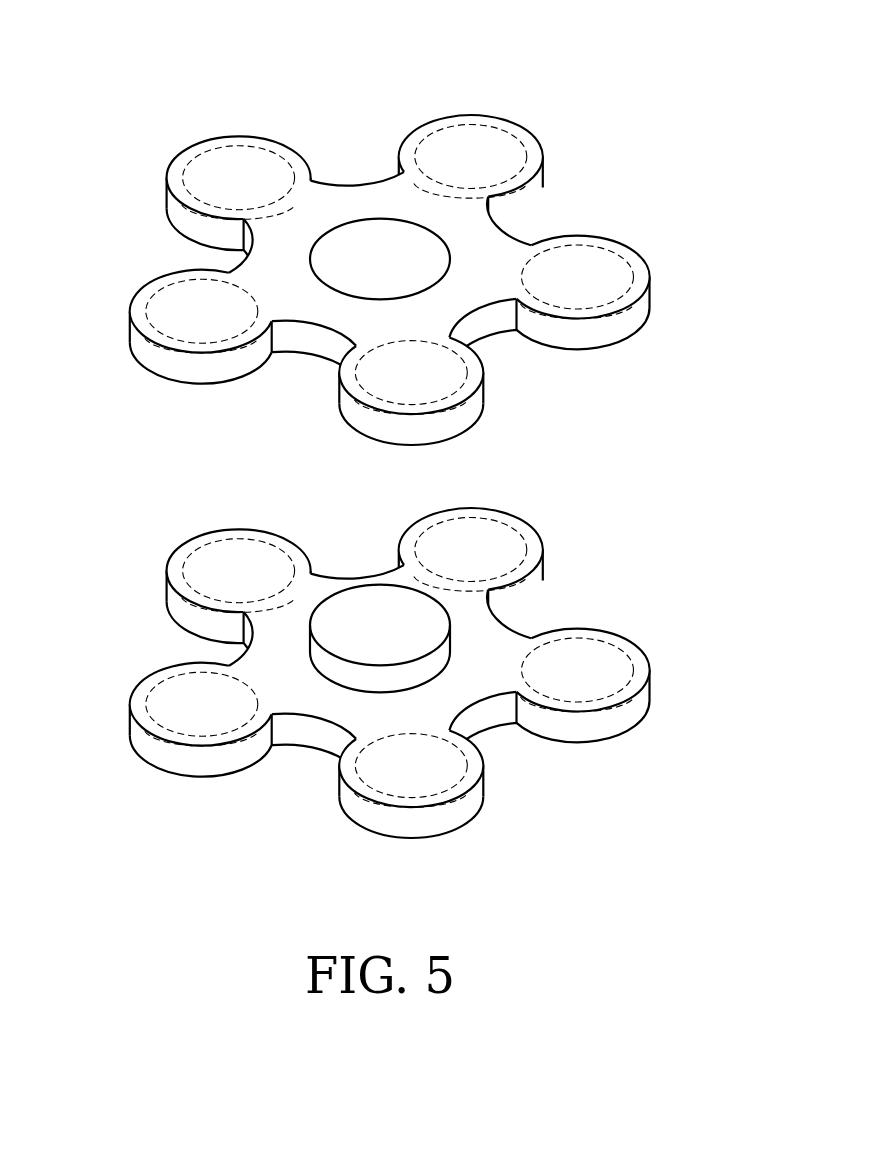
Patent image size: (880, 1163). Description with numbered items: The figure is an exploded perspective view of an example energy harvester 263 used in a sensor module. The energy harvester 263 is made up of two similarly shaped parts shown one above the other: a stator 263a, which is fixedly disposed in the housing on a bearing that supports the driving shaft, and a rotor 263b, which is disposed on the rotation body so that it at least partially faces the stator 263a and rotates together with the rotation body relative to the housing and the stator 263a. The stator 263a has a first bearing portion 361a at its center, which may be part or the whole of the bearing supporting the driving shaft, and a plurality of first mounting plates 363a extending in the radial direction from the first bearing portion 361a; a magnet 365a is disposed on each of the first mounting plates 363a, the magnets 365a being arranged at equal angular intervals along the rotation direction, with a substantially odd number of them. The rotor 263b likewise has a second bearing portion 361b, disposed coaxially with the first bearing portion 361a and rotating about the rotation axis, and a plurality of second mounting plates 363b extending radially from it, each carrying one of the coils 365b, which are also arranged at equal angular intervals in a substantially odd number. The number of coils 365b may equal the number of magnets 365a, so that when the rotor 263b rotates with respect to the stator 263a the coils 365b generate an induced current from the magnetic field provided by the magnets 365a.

The energy harvester 263 is at (411, 440).
The stator 263a is at (411, 680).
The rotor 263b is at (406, 253).
The first bearing portion 361a is at (369, 600).
The second bearing portion 361b is at (373, 238).
The first mounting plates 363a is at (526, 526).
The second mounting plates 363b is at (168, 178).
The magnets 365a is at (168, 576).
The coils 365b is at (529, 130).